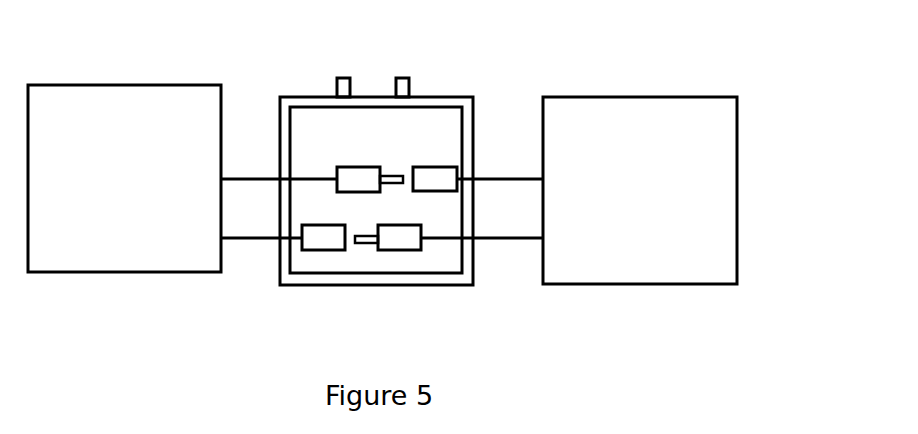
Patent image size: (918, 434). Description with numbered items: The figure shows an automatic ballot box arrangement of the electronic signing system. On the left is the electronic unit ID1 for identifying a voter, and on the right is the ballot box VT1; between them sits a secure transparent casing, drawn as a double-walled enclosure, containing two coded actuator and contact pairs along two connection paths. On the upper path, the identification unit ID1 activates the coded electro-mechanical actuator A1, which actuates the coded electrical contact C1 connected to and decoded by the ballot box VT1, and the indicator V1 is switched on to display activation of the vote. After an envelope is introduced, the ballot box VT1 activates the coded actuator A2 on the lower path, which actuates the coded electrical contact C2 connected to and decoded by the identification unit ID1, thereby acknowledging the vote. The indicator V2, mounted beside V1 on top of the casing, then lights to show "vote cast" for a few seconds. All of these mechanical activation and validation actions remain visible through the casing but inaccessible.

The electronic unit for identifying a voter ID1 is at (133, 255).
The ballot box VT1 is at (725, 190).
The indicator for displaying activation of a vote V1 is at (343, 78).
The indicator for viewing validation of a vote V2 is at (402, 78).
The electro-mechanical actuator coded to activate a vote A1 is at (347, 172).
The electro-mechanical actuator coded to acknowledge the vote A2 is at (390, 240).
The electrical contact for activating the vote C1 is at (452, 188).
The electrical contact for acknowledging the vote C2 is at (322, 240).